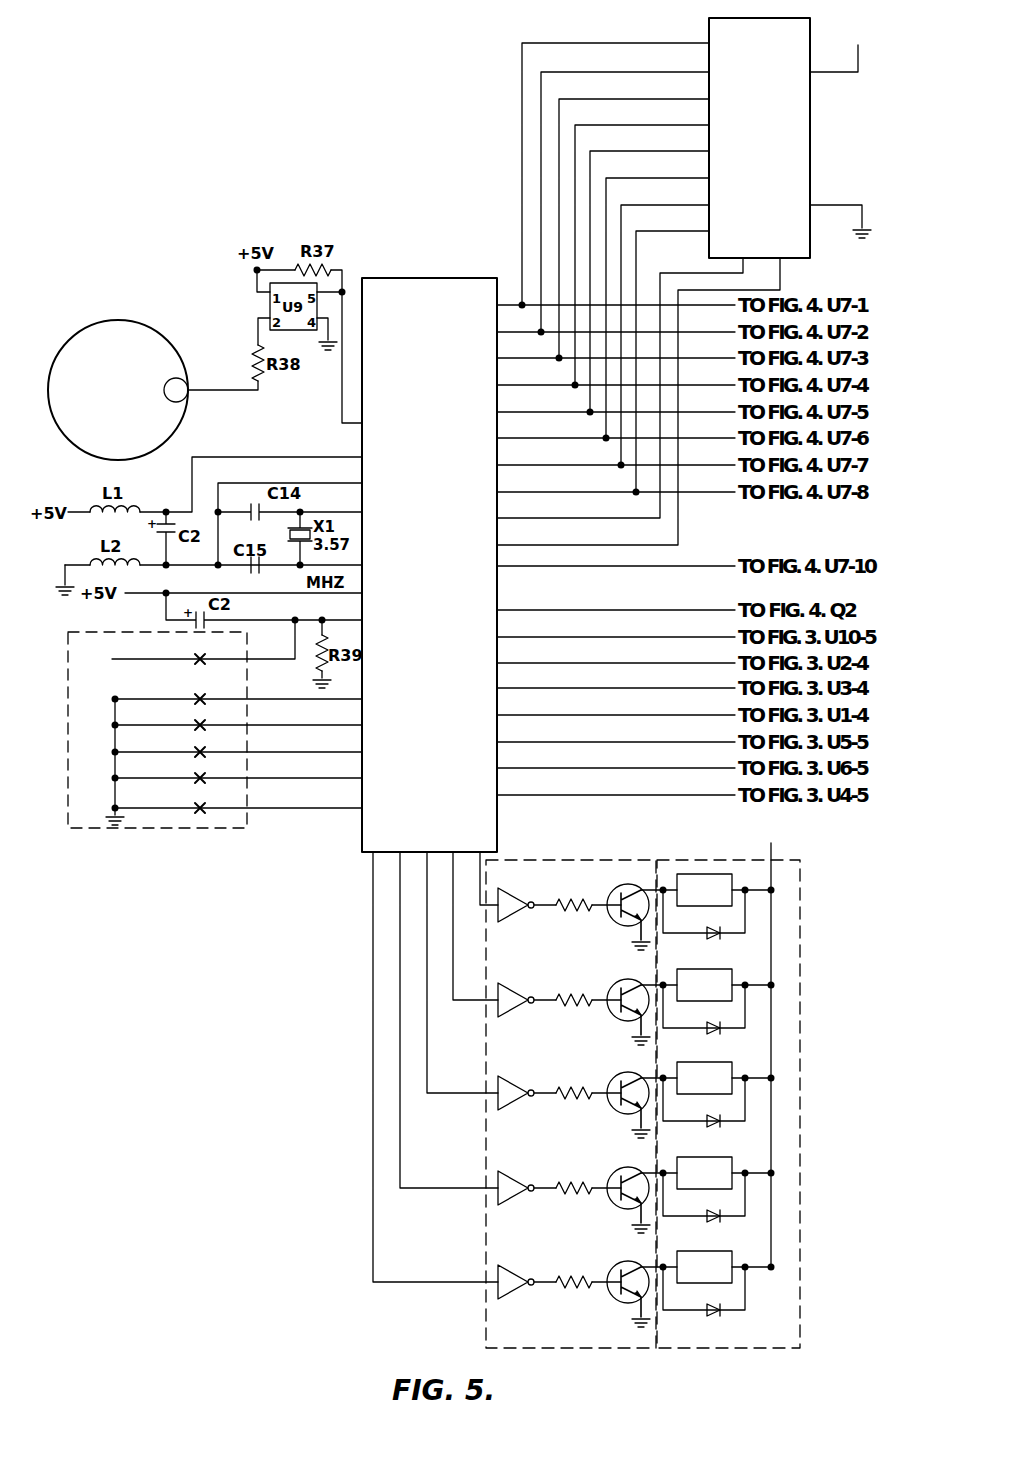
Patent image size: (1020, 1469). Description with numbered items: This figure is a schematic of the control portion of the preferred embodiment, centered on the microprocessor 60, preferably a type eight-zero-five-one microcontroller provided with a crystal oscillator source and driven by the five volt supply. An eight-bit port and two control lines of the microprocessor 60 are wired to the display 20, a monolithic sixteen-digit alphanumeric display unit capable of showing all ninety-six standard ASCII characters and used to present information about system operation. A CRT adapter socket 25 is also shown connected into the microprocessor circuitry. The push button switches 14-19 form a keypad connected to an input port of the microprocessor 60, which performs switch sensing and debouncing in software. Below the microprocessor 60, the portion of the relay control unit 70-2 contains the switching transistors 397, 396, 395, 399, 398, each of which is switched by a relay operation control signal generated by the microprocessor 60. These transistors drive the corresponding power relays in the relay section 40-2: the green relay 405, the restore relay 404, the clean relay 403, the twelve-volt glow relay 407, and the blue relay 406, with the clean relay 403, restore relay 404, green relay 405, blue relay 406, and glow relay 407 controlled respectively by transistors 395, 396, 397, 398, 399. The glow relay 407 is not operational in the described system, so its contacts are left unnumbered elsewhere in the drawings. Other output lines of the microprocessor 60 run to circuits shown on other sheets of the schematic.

The display 20 is at (806, 3).
The microprocessor 60 is at (455, 278).
The CRT adapter socket 25 is at (135, 326).
The push button switches 14-19 is at (130, 831).
The driver circuit (inverters U8 and transistors) 70-2 is at (590, 861).
The LED indicator display 40-2 is at (800, 973).
The control transistor 397 is at (612, 887).
The control transistor 396 is at (612, 982).
The control transistor 395 is at (612, 1075).
The control transistor 399 is at (612, 1170).
The control transistor 398 is at (612, 1264).
The green relay 405 is at (732, 880).
The restore relay 404 is at (729, 969).
The clean relay 403 is at (729, 1062).
The G12 relay 407 is at (729, 1157).
The blue relay 406 is at (729, 1251).